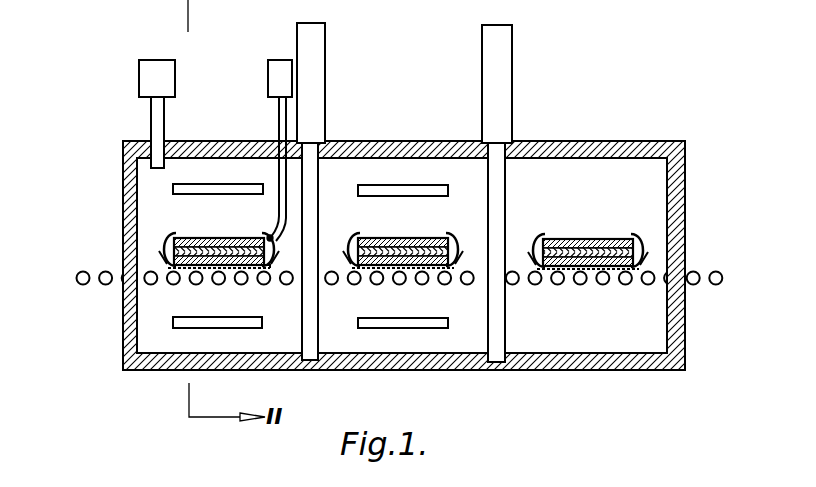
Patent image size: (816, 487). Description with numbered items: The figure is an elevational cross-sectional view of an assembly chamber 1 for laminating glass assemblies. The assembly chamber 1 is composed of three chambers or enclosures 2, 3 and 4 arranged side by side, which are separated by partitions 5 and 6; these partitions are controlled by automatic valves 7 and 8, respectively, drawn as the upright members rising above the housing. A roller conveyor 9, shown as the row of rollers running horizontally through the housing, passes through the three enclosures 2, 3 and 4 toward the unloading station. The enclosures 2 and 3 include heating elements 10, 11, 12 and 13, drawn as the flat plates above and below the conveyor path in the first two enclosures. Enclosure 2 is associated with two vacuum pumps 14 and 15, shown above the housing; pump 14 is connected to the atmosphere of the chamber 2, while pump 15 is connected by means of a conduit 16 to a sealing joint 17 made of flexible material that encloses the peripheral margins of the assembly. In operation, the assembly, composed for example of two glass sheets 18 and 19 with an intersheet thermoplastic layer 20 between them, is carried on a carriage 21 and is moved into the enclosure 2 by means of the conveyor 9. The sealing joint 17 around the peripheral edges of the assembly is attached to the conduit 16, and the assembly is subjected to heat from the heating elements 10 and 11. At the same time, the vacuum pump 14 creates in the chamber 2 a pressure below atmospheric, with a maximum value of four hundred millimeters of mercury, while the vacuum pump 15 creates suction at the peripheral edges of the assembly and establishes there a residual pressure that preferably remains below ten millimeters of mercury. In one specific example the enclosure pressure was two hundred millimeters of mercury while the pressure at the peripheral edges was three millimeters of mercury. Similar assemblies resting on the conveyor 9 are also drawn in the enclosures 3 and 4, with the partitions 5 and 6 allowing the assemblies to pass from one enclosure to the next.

The assembly chamber 1 is at (454, 374).
The enclosure 2 is at (210, 262).
The enclosure 3 is at (419, 222).
The enclosure 4 is at (610, 222).
The partition 5 is at (318, 171).
The partition 6 is at (505, 189).
The automatic valve 7 is at (325, 57).
The automatic valve 8 is at (512, 53).
The roller conveyor 9 is at (83, 285).
The heating element 10 is at (192, 184).
The heating element 11 is at (215, 330).
The heating element 12 is at (401, 185).
The heating element 13 is at (412, 329).
The vacuum pump 14 is at (155, 59).
The vacuum pump 15 is at (280, 59).
The conduit 16 is at (278, 186).
The sealing joint 17 is at (163, 249).
The glass sheet 18 is at (236, 238).
The glass sheet 19 is at (190, 269).
The intersheet thermoplastic layer 20 is at (188, 238).
The carriage 21 is at (268, 270).